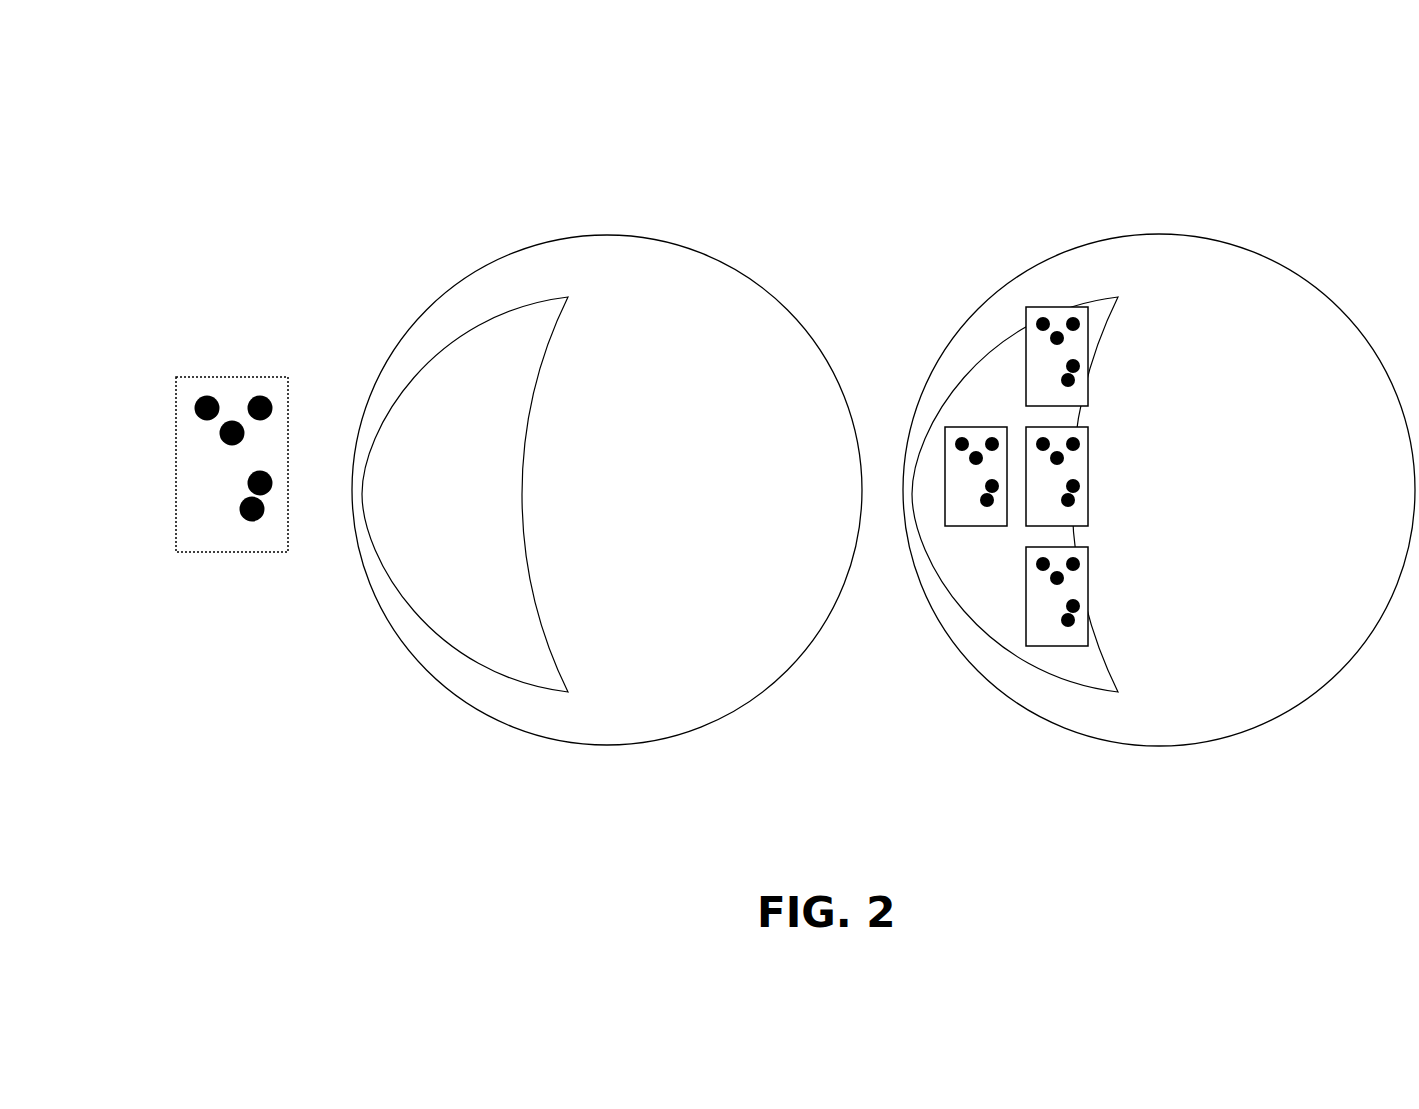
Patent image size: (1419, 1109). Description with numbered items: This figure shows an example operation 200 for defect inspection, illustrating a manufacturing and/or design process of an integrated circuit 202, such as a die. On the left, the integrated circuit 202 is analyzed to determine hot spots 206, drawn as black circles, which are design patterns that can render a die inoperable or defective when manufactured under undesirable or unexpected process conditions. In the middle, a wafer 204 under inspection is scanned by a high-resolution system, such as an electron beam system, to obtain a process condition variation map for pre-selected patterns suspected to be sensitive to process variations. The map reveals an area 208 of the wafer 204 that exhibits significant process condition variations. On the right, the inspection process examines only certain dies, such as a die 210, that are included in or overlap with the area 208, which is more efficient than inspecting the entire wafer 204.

The operation 200 is at (306, 161).
The integrated circuit 202 is at (233, 455).
The wafer 204 is at (647, 280).
The hot spots 206 is at (248, 514).
The area 208 is at (450, 628).
The die 210 is at (1047, 307).